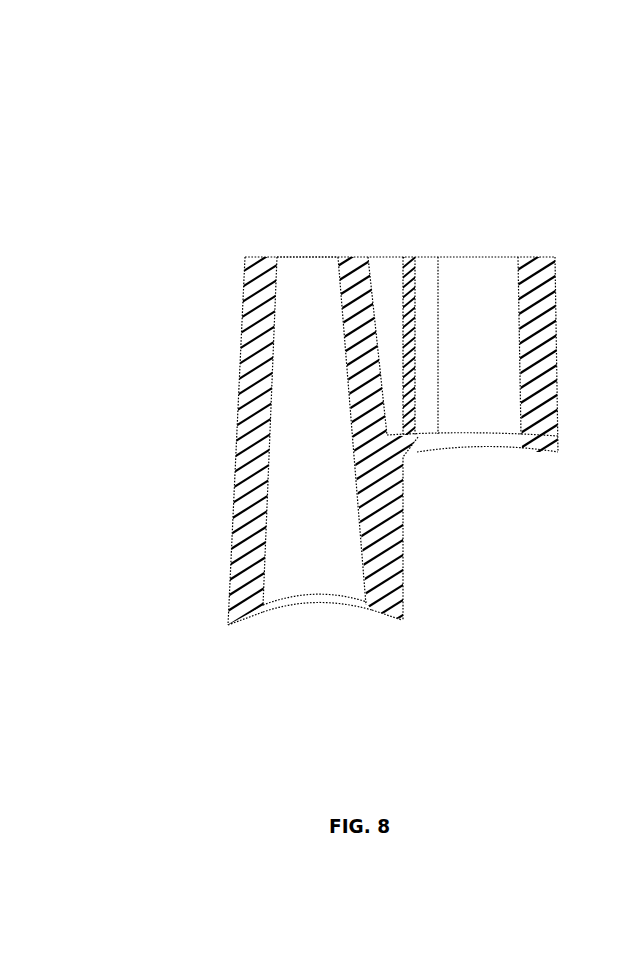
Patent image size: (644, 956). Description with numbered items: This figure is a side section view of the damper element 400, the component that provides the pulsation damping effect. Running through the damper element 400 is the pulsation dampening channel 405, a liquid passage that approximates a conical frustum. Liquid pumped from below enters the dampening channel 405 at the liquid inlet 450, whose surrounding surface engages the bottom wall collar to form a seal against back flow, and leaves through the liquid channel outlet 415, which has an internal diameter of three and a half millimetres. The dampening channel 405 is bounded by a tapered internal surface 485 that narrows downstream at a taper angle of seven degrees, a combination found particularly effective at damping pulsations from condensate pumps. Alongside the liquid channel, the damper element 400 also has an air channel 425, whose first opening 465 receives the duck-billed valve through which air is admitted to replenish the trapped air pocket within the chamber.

The damper element 400 is at (167, 119).
The pulsation dampening channel 405 is at (257, 337).
The liquid channel outlet 415 is at (297, 258).
The air channel 425 is at (512, 260).
The liquid inlet 450 is at (284, 614).
The first opening 465 is at (509, 459).
The tapered internal surface 485 is at (267, 452).